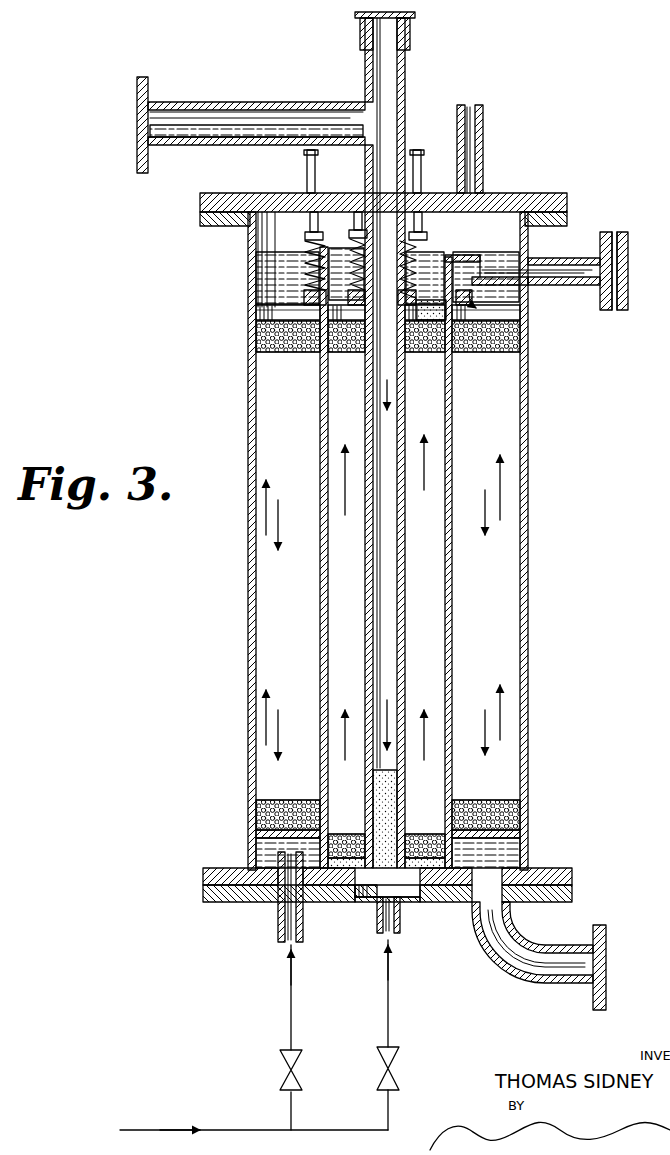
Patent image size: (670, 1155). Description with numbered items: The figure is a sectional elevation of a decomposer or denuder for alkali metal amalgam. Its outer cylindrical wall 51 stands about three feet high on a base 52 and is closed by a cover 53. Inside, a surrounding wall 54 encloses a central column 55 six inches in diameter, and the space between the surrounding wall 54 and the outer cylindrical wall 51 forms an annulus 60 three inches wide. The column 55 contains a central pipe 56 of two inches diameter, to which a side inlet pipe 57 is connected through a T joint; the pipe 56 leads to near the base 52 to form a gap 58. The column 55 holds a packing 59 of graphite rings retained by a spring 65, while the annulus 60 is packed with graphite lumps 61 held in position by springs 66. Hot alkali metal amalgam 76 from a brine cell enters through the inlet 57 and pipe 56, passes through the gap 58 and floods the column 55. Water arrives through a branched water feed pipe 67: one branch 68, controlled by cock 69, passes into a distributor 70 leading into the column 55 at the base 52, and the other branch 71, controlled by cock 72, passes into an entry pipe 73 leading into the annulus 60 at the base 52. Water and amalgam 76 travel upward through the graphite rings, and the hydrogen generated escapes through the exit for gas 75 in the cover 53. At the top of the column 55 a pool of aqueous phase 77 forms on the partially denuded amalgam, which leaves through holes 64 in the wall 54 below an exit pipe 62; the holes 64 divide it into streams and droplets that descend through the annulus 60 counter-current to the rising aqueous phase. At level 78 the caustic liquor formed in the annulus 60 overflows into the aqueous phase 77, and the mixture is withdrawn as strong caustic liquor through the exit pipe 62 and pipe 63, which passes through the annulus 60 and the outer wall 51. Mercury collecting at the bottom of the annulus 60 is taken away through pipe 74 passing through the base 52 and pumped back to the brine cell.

The outer cylindrical wall 51 is at (528, 492).
The base 52 is at (572, 897).
The cover 53 is at (567, 197).
The surrounding wall 54 is at (452, 562).
The central column 55 is at (433, 625).
The central pipe 56 is at (365, 70).
The side inlet pipe 57 is at (262, 98).
The gap 58 is at (430, 900).
The packing of graphite rings 59 is at (355, 840).
The annulus 60 is at (503, 414).
The graphite lumps 61 is at (490, 795).
The exit pipe 62 is at (467, 268).
The pipe 63 is at (590, 250).
The holes 64 is at (466, 312).
The spring 65 is at (427, 195).
The springs 66 is at (307, 245).
The branched water feed pipe 67 is at (250, 1130).
The branch 68 is at (390, 1107).
The cock 69 is at (399, 1058).
The distributor 70 is at (408, 910).
The branch 71 is at (286, 1104).
The cock 72 is at (280, 1068).
The entry pipe 73 is at (278, 925).
The pipe 74 is at (530, 955).
The exit for gas 75 is at (483, 115).
The hot alkali metal amalgam 76 is at (232, 132).
The aqueous phase 77 is at (248, 275).
The level 78 is at (512, 252).